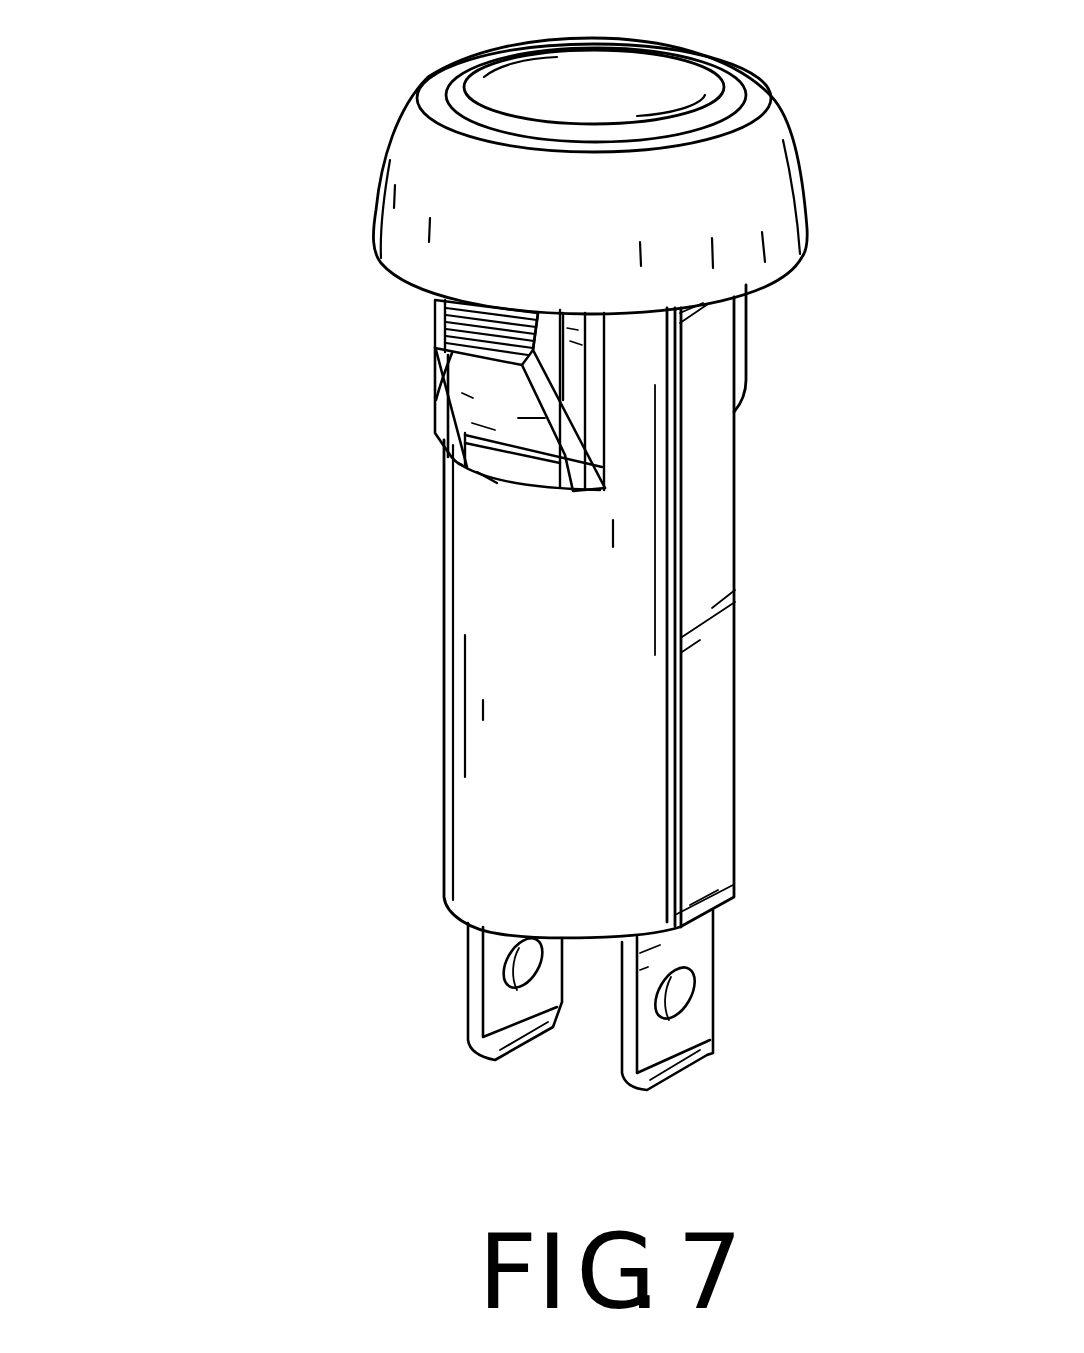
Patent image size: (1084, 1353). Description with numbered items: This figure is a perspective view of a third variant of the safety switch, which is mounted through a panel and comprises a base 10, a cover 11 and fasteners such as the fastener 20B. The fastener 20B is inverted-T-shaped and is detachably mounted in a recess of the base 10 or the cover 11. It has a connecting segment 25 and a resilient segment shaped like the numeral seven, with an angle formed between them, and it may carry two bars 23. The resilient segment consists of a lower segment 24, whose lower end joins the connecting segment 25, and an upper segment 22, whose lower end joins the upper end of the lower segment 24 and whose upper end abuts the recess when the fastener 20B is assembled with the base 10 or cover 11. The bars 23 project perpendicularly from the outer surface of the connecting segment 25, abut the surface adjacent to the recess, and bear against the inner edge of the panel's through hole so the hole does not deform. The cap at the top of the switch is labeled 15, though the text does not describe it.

The base 10 is at (716, 640).
The cover 11 is at (468, 663).
The push button cap 15 is at (760, 192).
The fastener 20B is at (477, 433).
The upper segment 22 is at (433, 432).
The bar 23 is at (433, 322).
The lower segment 24 is at (600, 483).
The connecting segment 25 is at (543, 473).